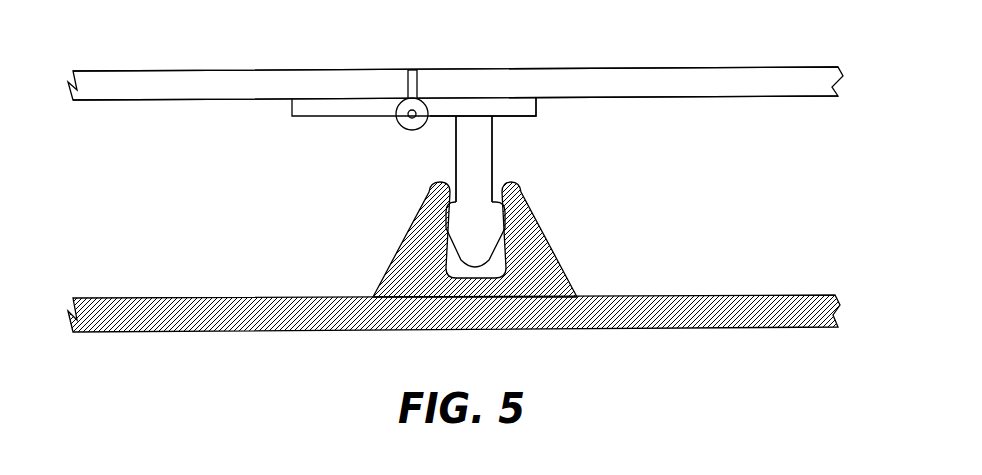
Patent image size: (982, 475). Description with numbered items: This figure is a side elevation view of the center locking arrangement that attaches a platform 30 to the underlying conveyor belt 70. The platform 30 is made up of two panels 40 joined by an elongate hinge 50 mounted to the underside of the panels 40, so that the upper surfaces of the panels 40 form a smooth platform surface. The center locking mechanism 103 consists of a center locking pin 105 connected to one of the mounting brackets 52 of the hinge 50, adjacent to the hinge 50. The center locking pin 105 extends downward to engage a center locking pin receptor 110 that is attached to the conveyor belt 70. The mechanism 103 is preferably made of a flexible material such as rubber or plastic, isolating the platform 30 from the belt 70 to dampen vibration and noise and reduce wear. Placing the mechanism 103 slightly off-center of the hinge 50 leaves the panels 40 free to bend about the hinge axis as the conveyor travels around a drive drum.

The platform 30 is at (239, 66).
The panel 40 is at (337, 70).
The elongate hinge 50 is at (332, 117).
The mounting bracket 52 is at (540, 105).
The conveyor belt 70 is at (240, 332).
The center locking mechanism 103 is at (504, 168).
The center locking pin 105 is at (456, 147).
The center locking pin receptor 110 is at (530, 250).